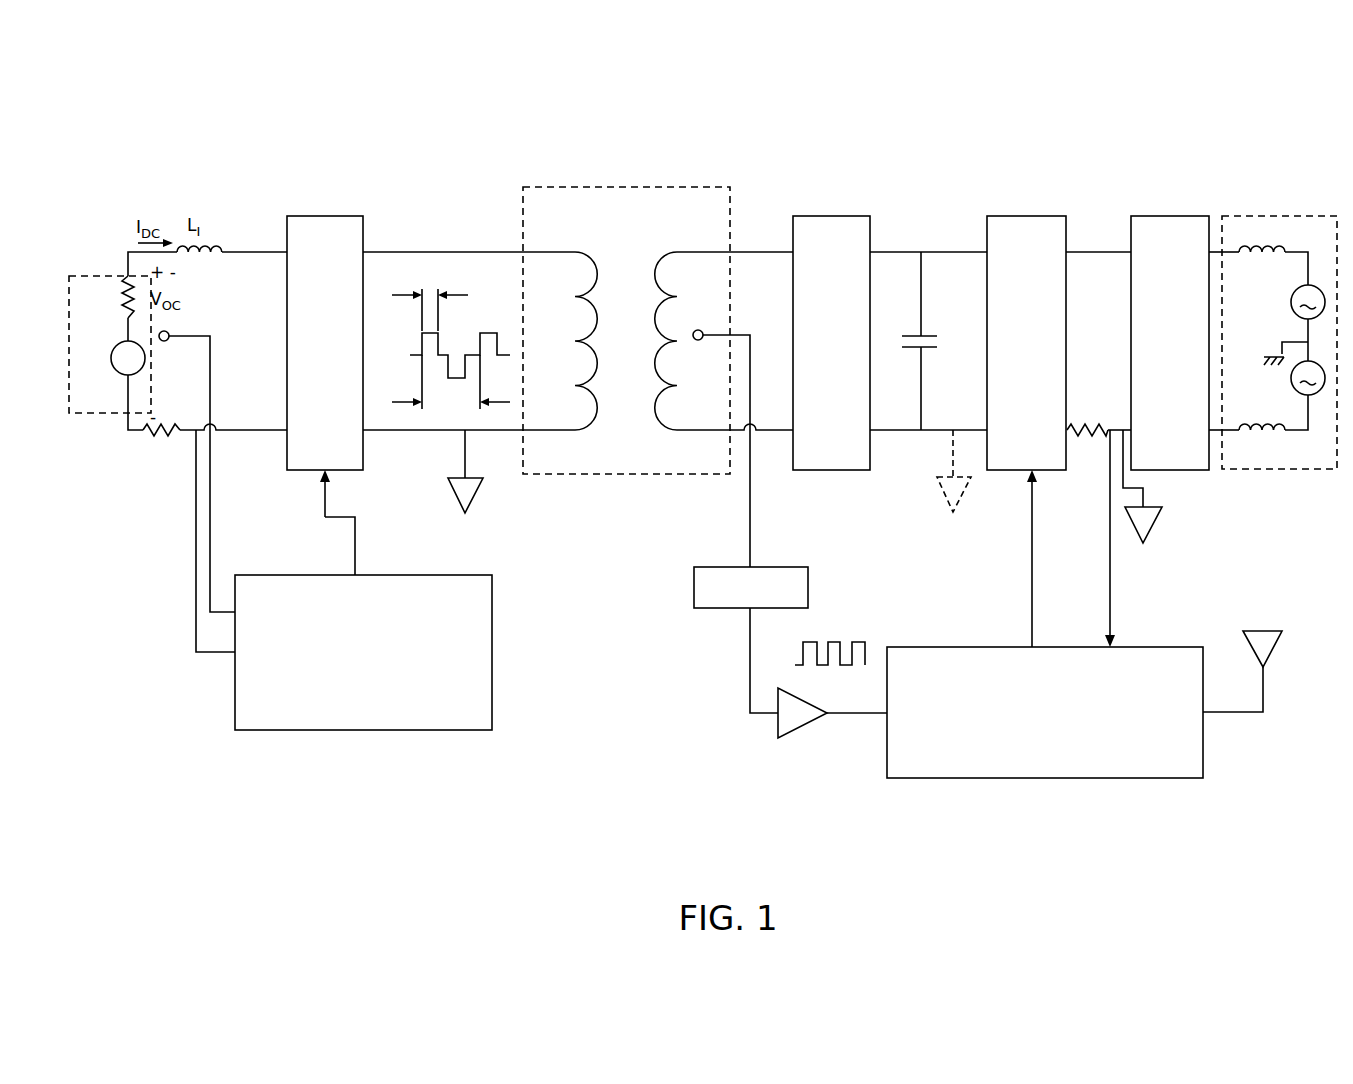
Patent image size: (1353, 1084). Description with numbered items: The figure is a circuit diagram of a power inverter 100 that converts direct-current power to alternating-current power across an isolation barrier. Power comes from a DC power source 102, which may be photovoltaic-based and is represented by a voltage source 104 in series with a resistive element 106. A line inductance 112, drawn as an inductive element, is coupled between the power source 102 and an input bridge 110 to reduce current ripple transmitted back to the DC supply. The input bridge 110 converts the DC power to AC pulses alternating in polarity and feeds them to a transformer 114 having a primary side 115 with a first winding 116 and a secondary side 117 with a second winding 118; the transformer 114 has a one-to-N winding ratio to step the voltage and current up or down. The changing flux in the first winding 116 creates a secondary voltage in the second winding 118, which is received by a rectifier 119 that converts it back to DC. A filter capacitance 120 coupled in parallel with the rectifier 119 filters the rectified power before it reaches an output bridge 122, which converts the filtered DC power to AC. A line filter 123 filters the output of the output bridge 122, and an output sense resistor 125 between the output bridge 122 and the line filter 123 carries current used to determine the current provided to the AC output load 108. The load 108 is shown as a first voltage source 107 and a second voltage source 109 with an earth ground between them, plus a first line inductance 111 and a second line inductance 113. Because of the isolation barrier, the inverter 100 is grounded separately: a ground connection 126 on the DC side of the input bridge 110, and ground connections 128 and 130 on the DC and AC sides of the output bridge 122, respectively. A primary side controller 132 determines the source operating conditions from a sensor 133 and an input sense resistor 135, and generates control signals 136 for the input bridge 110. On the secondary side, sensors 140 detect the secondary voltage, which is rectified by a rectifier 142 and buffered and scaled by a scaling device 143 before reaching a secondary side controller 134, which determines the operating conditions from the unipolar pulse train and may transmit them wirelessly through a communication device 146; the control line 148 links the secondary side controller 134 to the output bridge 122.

The power inverter 100 is at (755, 173).
The DC power source 102 is at (112, 275).
The voltage source 104 is at (126, 378).
The resistive element 106 is at (108, 284).
The first voltage source 107 is at (1291, 306).
The AC output load 108 is at (1256, 374).
The second voltage source 109 is at (1291, 381).
The input bridge 110 is at (363, 230).
The first line inductance 111 is at (1243, 233).
The line inductance 112 is at (214, 266).
The second line inductance 113 is at (1305, 488).
The transformer 114 is at (626, 304).
The primary side 115 is at (479, 232).
The first winding 116 is at (598, 283).
The secondary side 117 is at (768, 222).
The second winding 118 is at (657, 393).
The rectifier 119 is at (831, 470).
The filter capacitance 120 is at (910, 318).
The output bridge 122 is at (1023, 216).
The line filter 123 is at (1188, 470).
The output sense resistor 125 is at (1090, 460).
The ground connection 126 is at (476, 496).
The ground connection 128 is at (1153, 533).
The ground connection 130 is at (949, 500).
The primary side controller 132 is at (492, 656).
The sensor 133 is at (167, 343).
The secondary side controller 134 is at (1072, 778).
The input sense resistor 135 is at (142, 452).
The control signals 136 is at (356, 551).
The sensors 140 is at (700, 341).
The rectifier 142 is at (808, 591).
The scaling device 143 is at (794, 736).
The communication device 146 is at (1262, 629).
The output bridge control signal 148 is at (1032, 578).